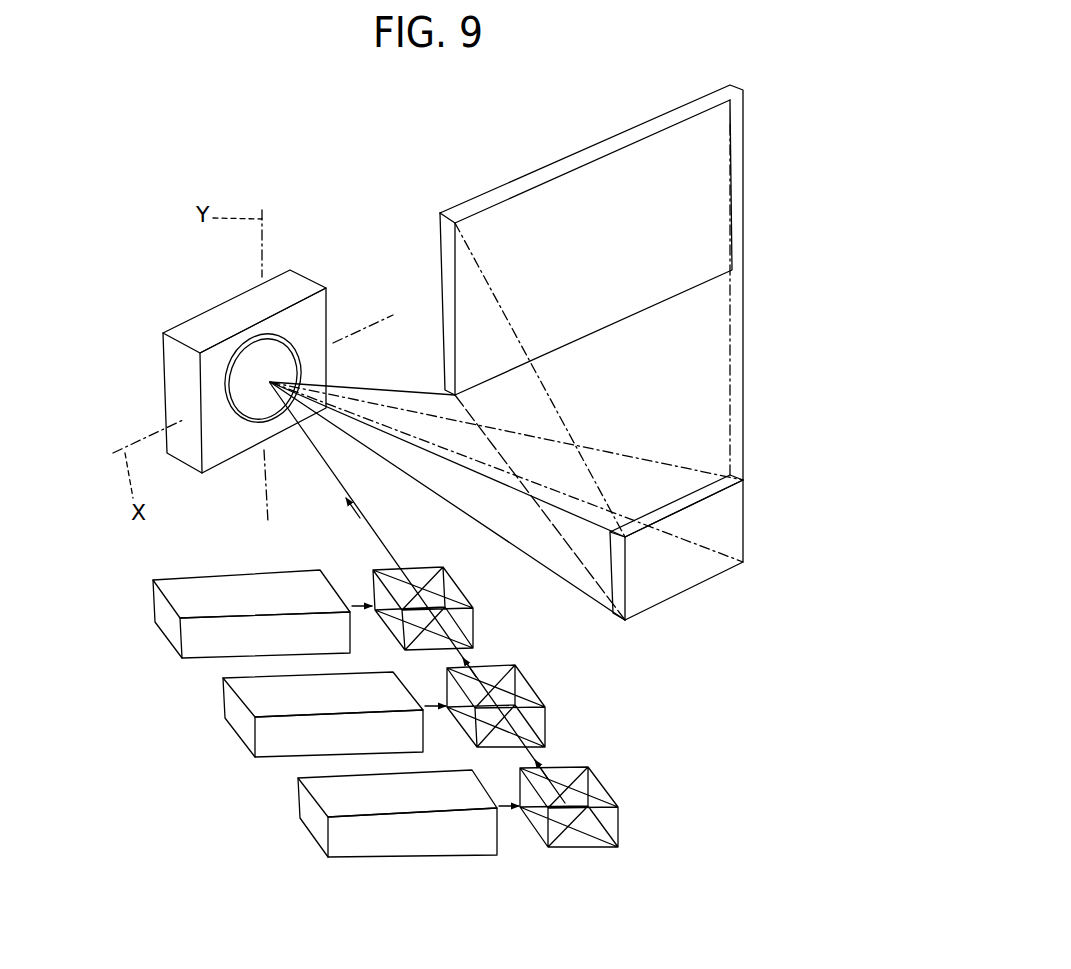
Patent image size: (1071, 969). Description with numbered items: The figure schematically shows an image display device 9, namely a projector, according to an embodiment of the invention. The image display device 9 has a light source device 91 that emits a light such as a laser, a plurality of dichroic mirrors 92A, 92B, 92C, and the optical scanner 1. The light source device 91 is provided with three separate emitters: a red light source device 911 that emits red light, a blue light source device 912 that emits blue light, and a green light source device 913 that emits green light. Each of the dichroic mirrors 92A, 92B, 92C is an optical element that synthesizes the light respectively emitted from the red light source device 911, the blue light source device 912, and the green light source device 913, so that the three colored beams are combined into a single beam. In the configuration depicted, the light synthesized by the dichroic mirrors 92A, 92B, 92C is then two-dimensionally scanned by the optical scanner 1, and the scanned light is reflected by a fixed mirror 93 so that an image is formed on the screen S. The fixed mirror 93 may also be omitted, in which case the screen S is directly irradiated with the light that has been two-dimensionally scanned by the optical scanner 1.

The image display device 9 is at (138, 264).
The optical scanner 1 is at (160, 366).
The light source device 91 is at (153, 810).
The red light source device 911 is at (333, 798).
The blue light source device 912 is at (260, 702).
The green light source device 913 is at (187, 600).
The dichroic mirror 92A is at (600, 783).
The dichroic mirror 92B is at (533, 687).
The dichroic mirror 92C is at (465, 588).
The fixed mirror 93 is at (720, 530).
The screen S is at (745, 128).